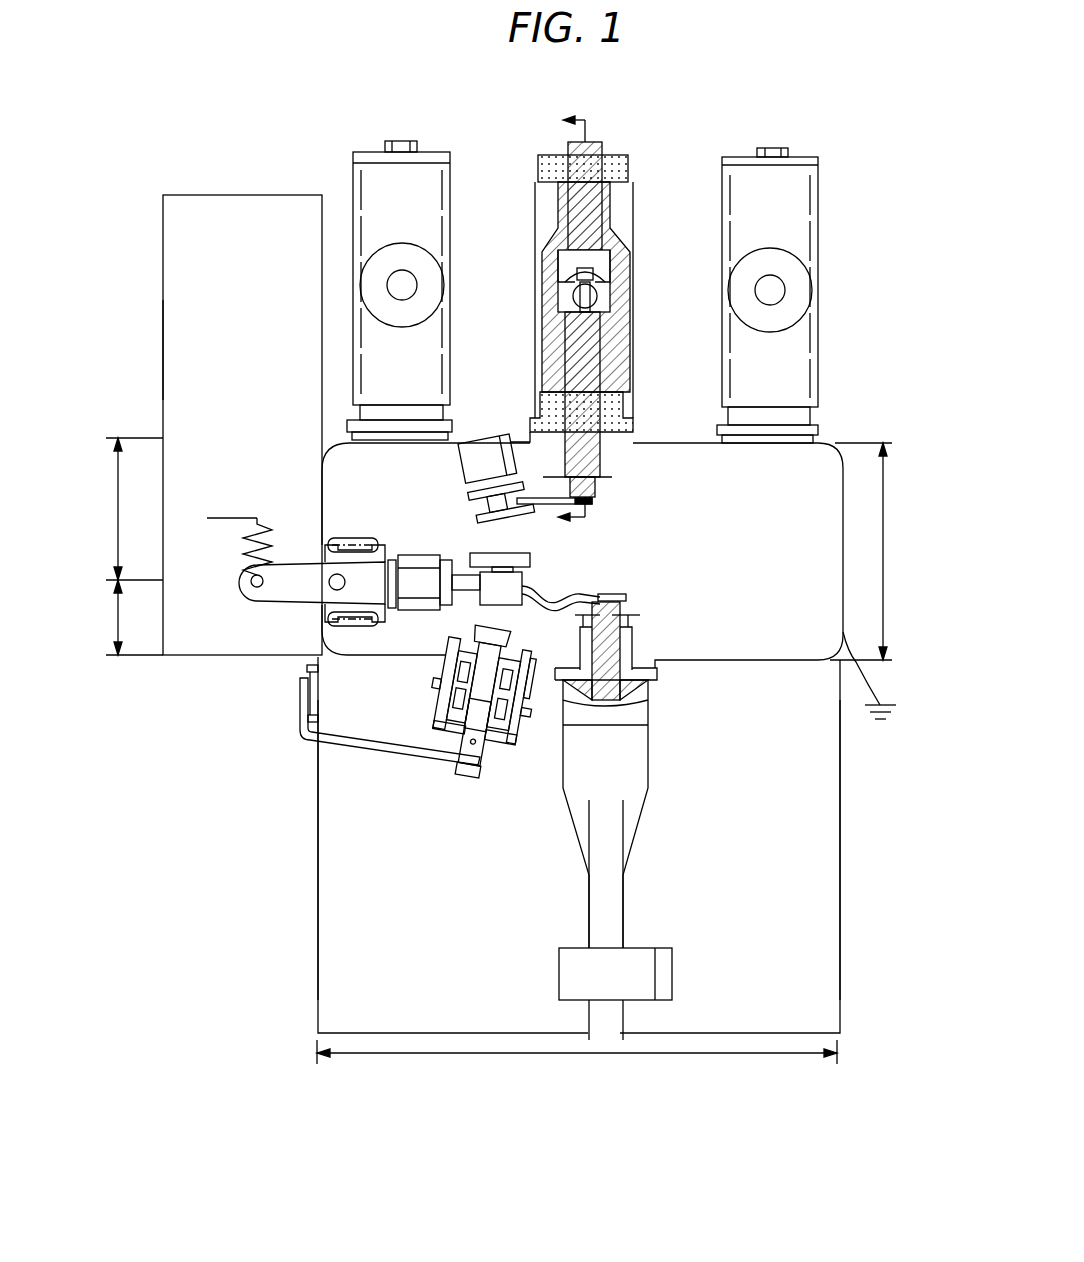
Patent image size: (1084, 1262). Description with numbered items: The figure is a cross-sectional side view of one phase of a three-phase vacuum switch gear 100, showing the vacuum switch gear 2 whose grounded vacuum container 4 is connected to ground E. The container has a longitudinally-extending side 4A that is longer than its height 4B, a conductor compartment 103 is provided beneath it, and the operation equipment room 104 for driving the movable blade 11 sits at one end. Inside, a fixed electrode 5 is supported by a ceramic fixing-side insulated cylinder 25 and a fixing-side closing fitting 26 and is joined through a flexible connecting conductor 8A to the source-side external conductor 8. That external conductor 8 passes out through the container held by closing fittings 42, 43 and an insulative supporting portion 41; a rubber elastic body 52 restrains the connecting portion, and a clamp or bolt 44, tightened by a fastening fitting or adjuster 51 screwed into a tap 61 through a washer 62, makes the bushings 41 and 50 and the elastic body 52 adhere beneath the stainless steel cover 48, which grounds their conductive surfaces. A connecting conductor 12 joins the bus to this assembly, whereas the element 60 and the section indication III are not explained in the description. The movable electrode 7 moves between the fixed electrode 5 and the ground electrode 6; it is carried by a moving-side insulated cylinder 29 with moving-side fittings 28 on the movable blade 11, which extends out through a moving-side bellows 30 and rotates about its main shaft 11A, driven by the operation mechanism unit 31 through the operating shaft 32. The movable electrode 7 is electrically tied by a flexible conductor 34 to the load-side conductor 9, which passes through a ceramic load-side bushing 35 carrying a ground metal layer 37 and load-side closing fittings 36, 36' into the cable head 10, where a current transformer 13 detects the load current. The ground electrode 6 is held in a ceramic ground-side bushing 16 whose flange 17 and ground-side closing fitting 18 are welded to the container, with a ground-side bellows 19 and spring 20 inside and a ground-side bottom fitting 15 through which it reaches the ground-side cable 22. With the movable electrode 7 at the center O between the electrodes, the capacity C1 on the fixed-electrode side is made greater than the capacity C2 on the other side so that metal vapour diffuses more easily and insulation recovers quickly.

The vacuum switch gear 2 is at (222, 704).
The grounded vacuum container 4 is at (790, 452).
The longitudinally-extending side 4A is at (442, 1054).
The height side 4B is at (872, 551).
The fixed electrode 5 is at (520, 525).
The ground electrode 6 is at (472, 762).
The movable electrode 7 is at (530, 560).
The external conductor 8 is at (595, 342).
The connecting conductor 8A is at (592, 500).
The load-side conductor 9 is at (632, 640).
The cable head 10 is at (632, 830).
The movable blade 11 is at (300, 600).
The main shaft 11A is at (330, 578).
The connecting conductor 12 is at (785, 292).
The current transformer 13 is at (672, 962).
The ground-side bottom fitting 15 is at (500, 755).
The ground-side bushing 16 is at (445, 740).
The flange 17 is at (435, 692).
The ground-side closing fitting 18 is at (440, 668).
The ground-side bellows 19 is at (515, 742).
The spring 20 is at (512, 718).
The ground-side cable 22 is at (360, 750).
The fixing-side insulated cylinder 25 is at (472, 462).
The fixing-side closing fitting 26 is at (490, 437).
The moving-side fittings 28 is at (365, 628).
The moving-side insulated cylinder 29 is at (420, 555).
The moving-side bellows 30 is at (360, 548).
The operation mechanism unit 31 is at (237, 513).
The operating shaft 32 is at (251, 578).
The flexible conductor 34 is at (612, 598).
The load-side bushing 35 is at (648, 722).
The load-side closing fitting 36 is at (647, 624).
The load-side closing fitting 36' is at (651, 682).
The ground metal layer 37 is at (650, 690).
The insulative supporting portion 41 is at (612, 400).
The closing fitting 42 is at (605, 480).
The closing fitting 43 is at (522, 432).
The clamp 44 is at (598, 264).
The cover 48 is at (633, 200).
The bushing 50 is at (628, 160).
The fastening fitting 51 is at (603, 148).
The elastic body 52 is at (600, 275).
The right bushing 60 is at (818, 212).
The tap 61 is at (612, 232).
The washer 62 is at (600, 284).
The vacuum switch gear 100 is at (316, 855).
The conductor compartment 103 is at (840, 845).
The operation equipment room 104 is at (165, 336).
The capacity C1 is at (134, 509).
The capacity C2 is at (134, 617).
The center O is at (112, 580).
The ground E is at (893, 716).
The section line III is at (585, 324).